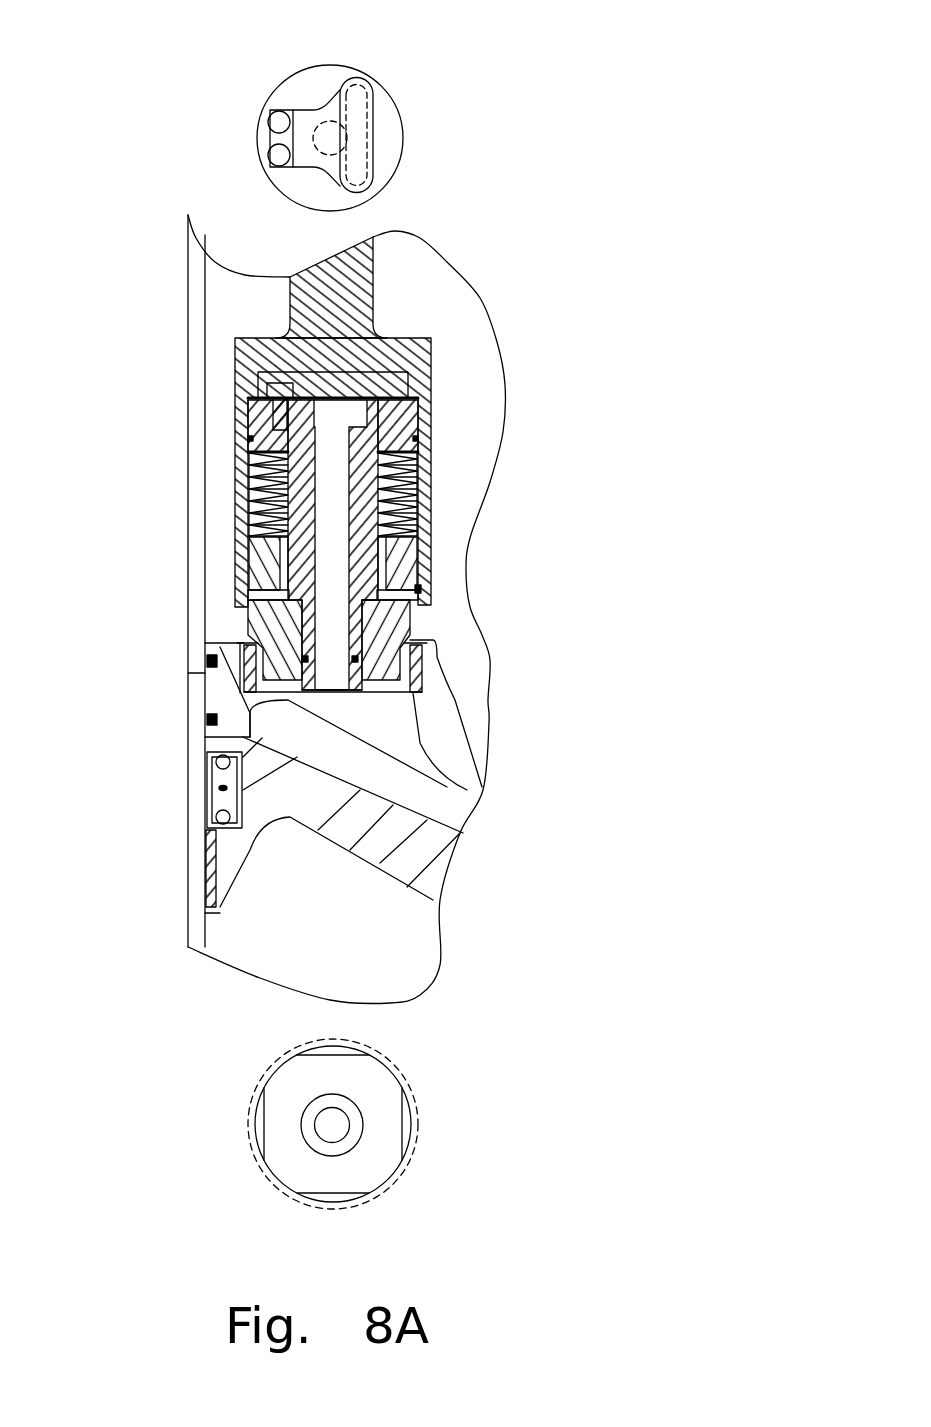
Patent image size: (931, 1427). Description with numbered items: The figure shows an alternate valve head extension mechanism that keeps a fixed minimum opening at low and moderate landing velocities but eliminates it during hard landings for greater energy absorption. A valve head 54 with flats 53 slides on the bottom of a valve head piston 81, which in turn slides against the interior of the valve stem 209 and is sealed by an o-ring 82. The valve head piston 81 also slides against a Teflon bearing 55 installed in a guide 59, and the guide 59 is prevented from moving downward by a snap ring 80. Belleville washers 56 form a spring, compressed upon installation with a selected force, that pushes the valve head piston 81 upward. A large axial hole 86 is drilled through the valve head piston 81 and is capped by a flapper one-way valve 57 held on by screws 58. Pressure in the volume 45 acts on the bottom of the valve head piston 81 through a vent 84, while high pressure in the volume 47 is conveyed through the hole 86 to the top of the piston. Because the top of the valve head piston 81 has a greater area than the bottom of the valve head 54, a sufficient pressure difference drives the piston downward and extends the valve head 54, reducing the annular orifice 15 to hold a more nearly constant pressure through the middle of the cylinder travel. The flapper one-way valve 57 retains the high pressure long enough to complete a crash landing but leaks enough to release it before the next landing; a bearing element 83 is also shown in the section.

The orifice 15 is at (375, 692).
The volume 45 is at (463, 335).
The volume 47 is at (290, 723).
The flats 53 is at (247, 630).
The valve head 54 is at (383, 633).
The Teflon bearing 55 is at (240, 566).
The Belleville washers 56 is at (431, 478).
The flapper one-way valve 57 is at (320, 397).
The screws 58 is at (267, 383).
The guide 59 is at (397, 563).
The snap ring 80 is at (418, 597).
The valve head piston 81 is at (420, 422).
The o-ring 82 is at (236, 443).
The wedge 83 is at (247, 540).
The vent 84 is at (431, 535).
The axial hole 86 is at (333, 690).
The valve stem 209 is at (375, 287).